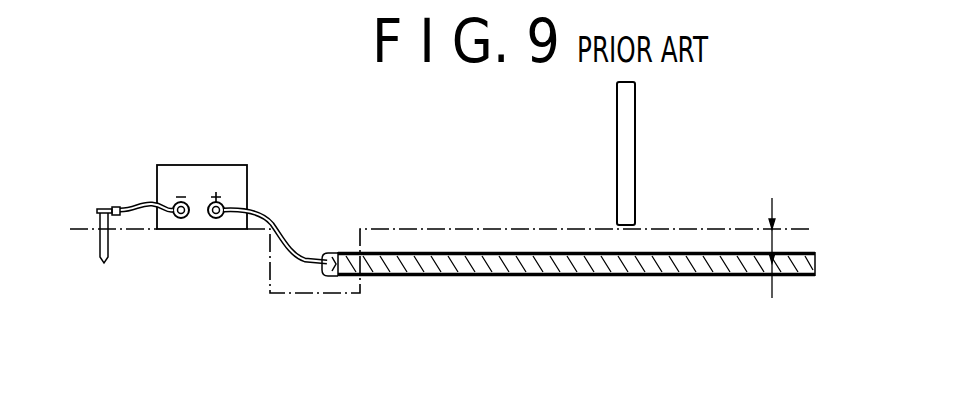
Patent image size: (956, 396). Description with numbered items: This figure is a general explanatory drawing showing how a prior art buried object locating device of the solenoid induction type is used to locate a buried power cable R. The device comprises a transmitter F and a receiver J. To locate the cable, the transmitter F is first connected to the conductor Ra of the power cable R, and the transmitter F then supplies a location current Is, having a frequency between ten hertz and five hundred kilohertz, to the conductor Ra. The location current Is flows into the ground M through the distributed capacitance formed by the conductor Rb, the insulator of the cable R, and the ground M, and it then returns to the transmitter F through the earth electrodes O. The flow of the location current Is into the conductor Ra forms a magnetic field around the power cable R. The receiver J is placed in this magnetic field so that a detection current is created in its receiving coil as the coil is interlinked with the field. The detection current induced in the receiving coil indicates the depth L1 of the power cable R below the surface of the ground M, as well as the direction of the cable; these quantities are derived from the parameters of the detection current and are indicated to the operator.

The transmitter F is at (200, 172).
The earth electrodes O is at (104, 263).
The location current Is is at (293, 227).
The buried power cable R is at (568, 317).
The conductor Ra is at (388, 263).
The conductor Rb is at (625, 277).
The ground M is at (700, 303).
The receiver J is at (635, 113).
The depth L1 is at (775, 243).